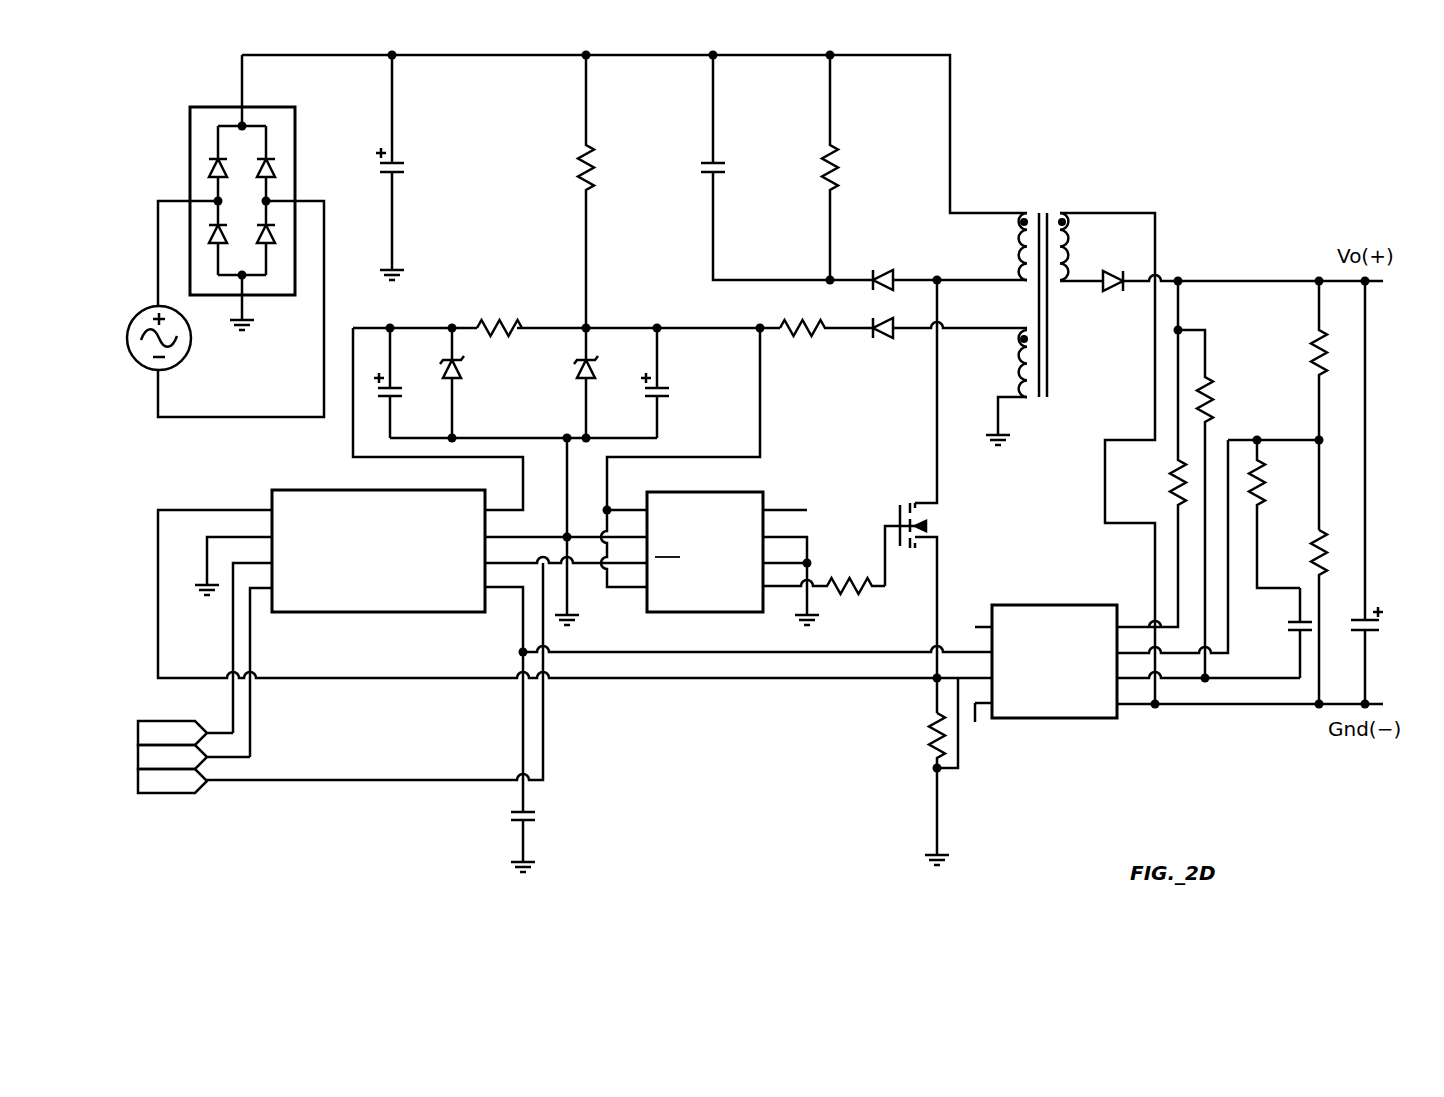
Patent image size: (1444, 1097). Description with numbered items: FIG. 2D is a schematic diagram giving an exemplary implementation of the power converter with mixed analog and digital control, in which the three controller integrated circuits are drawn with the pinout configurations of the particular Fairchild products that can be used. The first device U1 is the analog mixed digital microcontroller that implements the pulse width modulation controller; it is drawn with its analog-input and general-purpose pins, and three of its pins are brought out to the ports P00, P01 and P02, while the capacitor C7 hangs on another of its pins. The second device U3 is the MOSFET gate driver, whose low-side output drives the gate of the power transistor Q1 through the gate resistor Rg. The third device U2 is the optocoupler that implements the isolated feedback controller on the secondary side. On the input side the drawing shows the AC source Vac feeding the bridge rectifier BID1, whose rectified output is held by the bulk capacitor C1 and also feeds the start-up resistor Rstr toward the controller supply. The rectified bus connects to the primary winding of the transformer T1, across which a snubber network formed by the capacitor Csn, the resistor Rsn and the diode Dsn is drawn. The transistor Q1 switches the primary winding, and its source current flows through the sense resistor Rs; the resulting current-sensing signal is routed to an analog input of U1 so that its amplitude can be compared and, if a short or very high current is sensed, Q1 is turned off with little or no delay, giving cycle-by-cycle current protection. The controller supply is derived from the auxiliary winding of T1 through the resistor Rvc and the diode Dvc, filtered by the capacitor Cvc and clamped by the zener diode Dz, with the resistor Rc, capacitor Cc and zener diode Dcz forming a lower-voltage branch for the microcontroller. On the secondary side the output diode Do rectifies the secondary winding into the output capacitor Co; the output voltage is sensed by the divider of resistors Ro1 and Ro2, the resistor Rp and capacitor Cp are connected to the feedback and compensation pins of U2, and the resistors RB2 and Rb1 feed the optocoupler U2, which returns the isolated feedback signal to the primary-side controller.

The bridge rectifier MB6S BID1 is at (235, 196).
The AC input source 90~260V Vac is at (225, 309).
The bulk capacitor 22uF/400V C1 is at (433, 171).
The startup resistor 150k Rstr is at (559, 191).
The snubber capacitor 2.2nF Csn is at (765, 167).
The snubber resistor 100k Rsn is at (862, 170).
The snubber diode UF4007 Dsn is at (928, 262).
The transformer T1 is at (1070, 443).
The output diode SB360 Do is at (1231, 276).
The resistor 100 RB2 is at (1149, 454).
The resistor 1k Rb1 is at (1218, 506).
The output divider resistor 6.8k Ro1 is at (1294, 405).
The output divider resistor 6.8k Ro2 is at (1294, 617).
The resistor 10k Rp is at (1273, 512).
The capacitor 0.1uF Cp is at (1274, 633).
The output capacitor 330uF/10V Co is at (1384, 492).
The isolated feedback controller IC U2 is at (1170, 598).
The power transistor Q1 is at (967, 496).
The gate resistor 5 Rg is at (824, 563).
The sense resistor 2.5 Rs is at (927, 775).
The MOSFET gate driver IC U3 is at (719, 485).
The analog mixed digital microcontroller U1 is at (411, 570).
The port P00 is at (185, 733).
The port P01 is at (194, 757).
The port P02 is at (340, 678).
The capacitor 0.1uF C7 is at (557, 836).
The resistor 1k Rc is at (499, 300).
The capacitor 1uF Cc is at (404, 383).
The zener diode 3.6V Dcz is at (476, 383).
The zener diode 15V Dz is at (606, 383).
The capacitor 10uF/25V Cvc is at (700, 383).
The resistor 5.6 Rvc is at (826, 352).
The diode 1N4148 Dvc is at (937, 357).